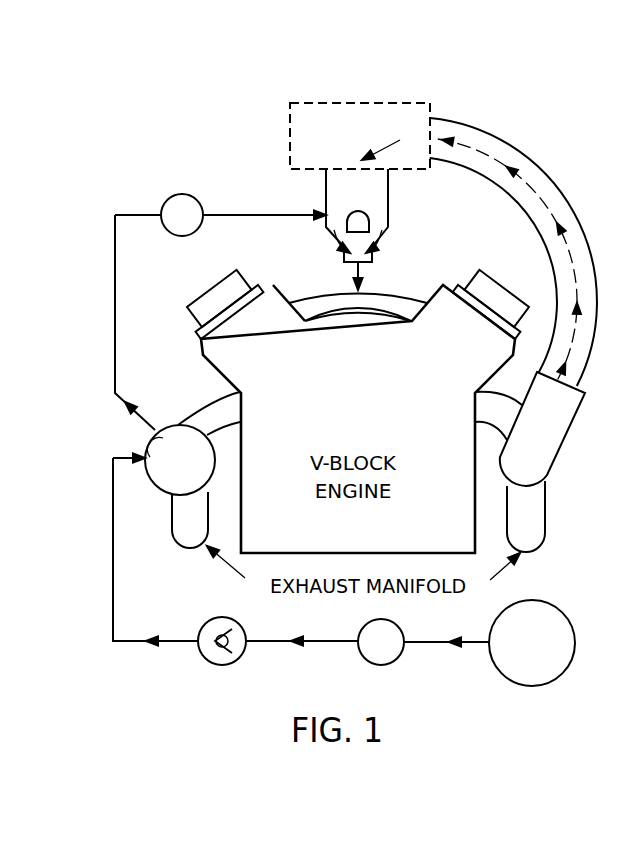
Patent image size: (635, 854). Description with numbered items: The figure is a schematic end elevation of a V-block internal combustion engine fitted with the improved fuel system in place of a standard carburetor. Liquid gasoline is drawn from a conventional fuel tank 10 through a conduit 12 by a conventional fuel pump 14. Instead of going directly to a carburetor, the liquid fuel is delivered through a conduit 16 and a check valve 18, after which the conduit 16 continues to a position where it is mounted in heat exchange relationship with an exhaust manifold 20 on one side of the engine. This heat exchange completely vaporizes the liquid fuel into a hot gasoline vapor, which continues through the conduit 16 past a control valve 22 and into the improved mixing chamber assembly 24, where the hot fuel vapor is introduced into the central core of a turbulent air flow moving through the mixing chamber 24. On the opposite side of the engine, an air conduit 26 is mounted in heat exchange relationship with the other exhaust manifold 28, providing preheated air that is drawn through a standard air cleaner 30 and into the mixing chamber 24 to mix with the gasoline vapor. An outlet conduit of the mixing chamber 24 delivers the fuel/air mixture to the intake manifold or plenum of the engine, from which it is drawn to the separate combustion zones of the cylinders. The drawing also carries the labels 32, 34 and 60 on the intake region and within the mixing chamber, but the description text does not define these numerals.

The fuel tank 10 is at (560, 675).
The conduit 12 is at (438, 645).
The fuel pump 14 is at (368, 664).
The conduit 16 is at (237, 212).
The check valve 18 is at (216, 667).
The exhaust manifold 20 is at (172, 518).
The control valve 22 is at (172, 196).
The mixing chamber assembly 24 is at (400, 222).
The air conduit 26 is at (590, 259).
The exhaust manifold 28 is at (545, 523).
The air cleaner 30 is at (388, 102).
The intake manifold 32 is at (372, 286).
The intake manifold heater plate 34 is at (355, 312).
The fuel vaporizing dome 60 is at (366, 216).